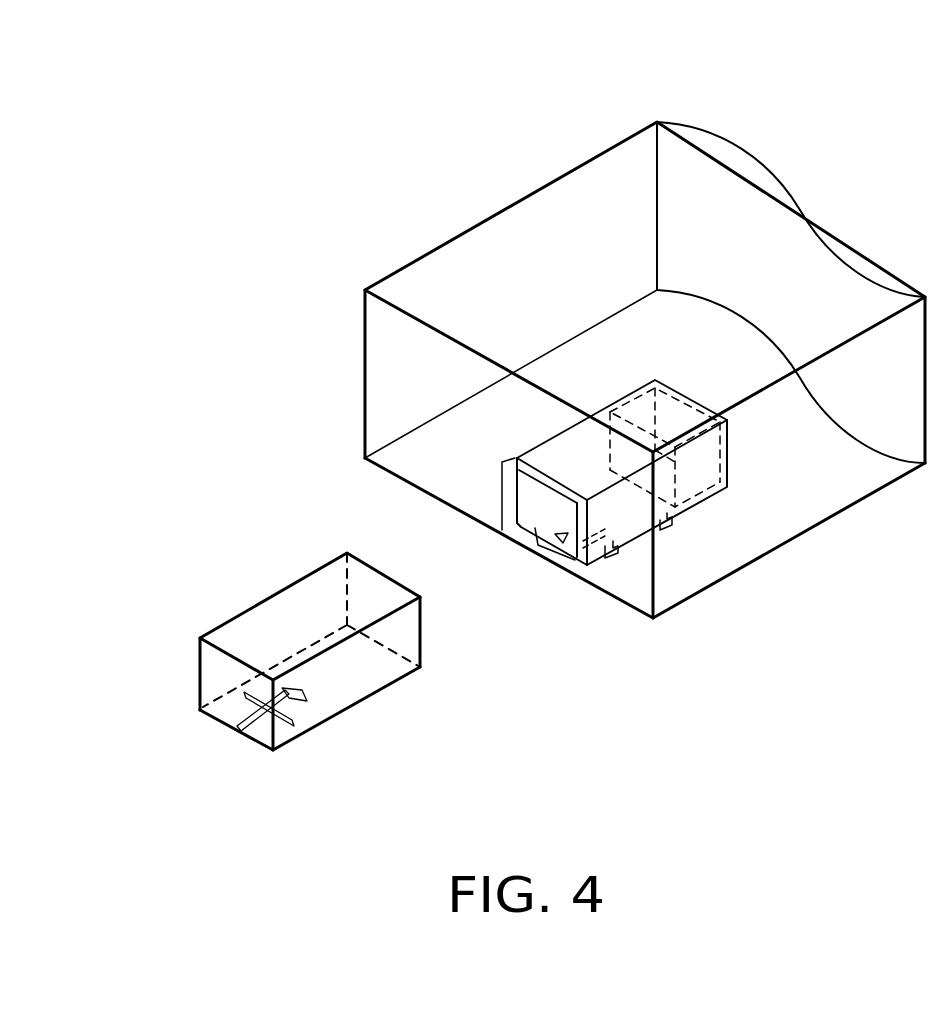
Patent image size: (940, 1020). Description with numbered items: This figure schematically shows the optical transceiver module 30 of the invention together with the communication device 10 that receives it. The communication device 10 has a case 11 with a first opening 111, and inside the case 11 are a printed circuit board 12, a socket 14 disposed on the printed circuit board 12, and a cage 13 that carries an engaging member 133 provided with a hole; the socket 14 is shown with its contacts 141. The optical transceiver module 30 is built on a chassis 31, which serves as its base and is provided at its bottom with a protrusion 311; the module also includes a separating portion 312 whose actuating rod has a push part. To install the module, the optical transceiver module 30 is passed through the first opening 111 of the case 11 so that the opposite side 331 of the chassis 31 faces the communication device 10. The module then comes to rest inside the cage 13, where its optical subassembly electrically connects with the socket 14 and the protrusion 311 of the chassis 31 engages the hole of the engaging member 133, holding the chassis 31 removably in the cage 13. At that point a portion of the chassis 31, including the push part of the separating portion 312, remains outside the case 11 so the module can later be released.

The communication device 10 is at (562, 153).
The case 11 is at (460, 270).
The printed circuit board 12 is at (435, 433).
The first opening 111 is at (510, 500).
The cage 13 is at (572, 447).
The engaging member 133 is at (563, 540).
The socket 14 is at (640, 407).
The contacts 141 is at (690, 507).
The optical transceiver module 30 is at (300, 620).
The chassis 31 is at (223, 670).
The protrusion 311 is at (313, 707).
The separating portion 312 is at (229, 731).
The opposite side 331 is at (422, 633).